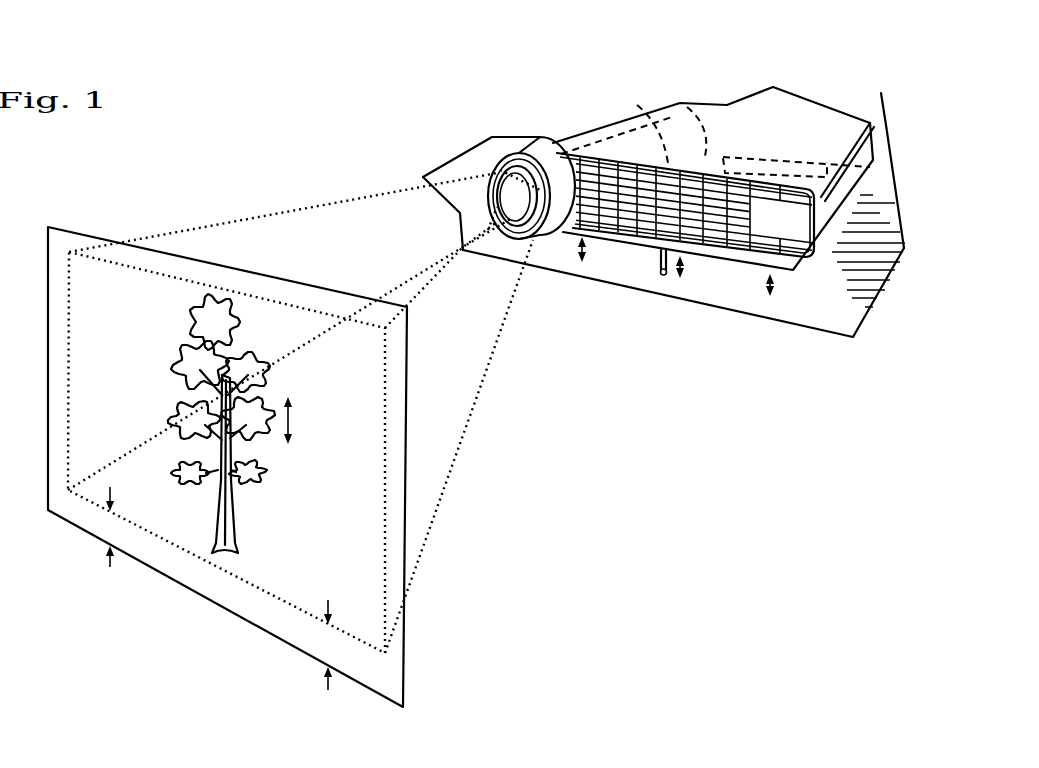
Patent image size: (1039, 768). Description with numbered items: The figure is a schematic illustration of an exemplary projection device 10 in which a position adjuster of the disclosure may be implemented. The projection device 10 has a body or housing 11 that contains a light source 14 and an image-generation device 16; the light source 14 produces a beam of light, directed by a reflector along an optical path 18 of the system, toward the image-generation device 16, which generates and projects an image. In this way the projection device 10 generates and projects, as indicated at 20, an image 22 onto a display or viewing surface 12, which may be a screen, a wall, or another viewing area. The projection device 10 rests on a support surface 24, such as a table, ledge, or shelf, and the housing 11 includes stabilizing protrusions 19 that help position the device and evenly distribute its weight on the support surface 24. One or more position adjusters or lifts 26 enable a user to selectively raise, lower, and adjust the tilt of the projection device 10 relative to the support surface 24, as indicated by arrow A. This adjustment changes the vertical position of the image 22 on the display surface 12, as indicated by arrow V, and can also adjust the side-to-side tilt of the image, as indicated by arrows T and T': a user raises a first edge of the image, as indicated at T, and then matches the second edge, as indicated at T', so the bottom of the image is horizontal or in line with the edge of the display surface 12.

The projection device 10 is at (813, 54).
The housing 11 is at (879, 126).
The display surface 12 is at (95, 231).
The light source 14 is at (678, 104).
The image-generation device 16 is at (650, 116).
The optical path 18 is at (580, 133).
The stabilizing protrusions 19 is at (796, 170).
The projection 20 is at (280, 211).
The image 22 is at (236, 500).
The support surface 24 is at (825, 315).
The position adjuster 26 is at (662, 276).
The arrow V is at (292, 422).
The arrow T is at (362, 429).
The arrow T' is at (549, 506).
The arrow A is at (683, 270).